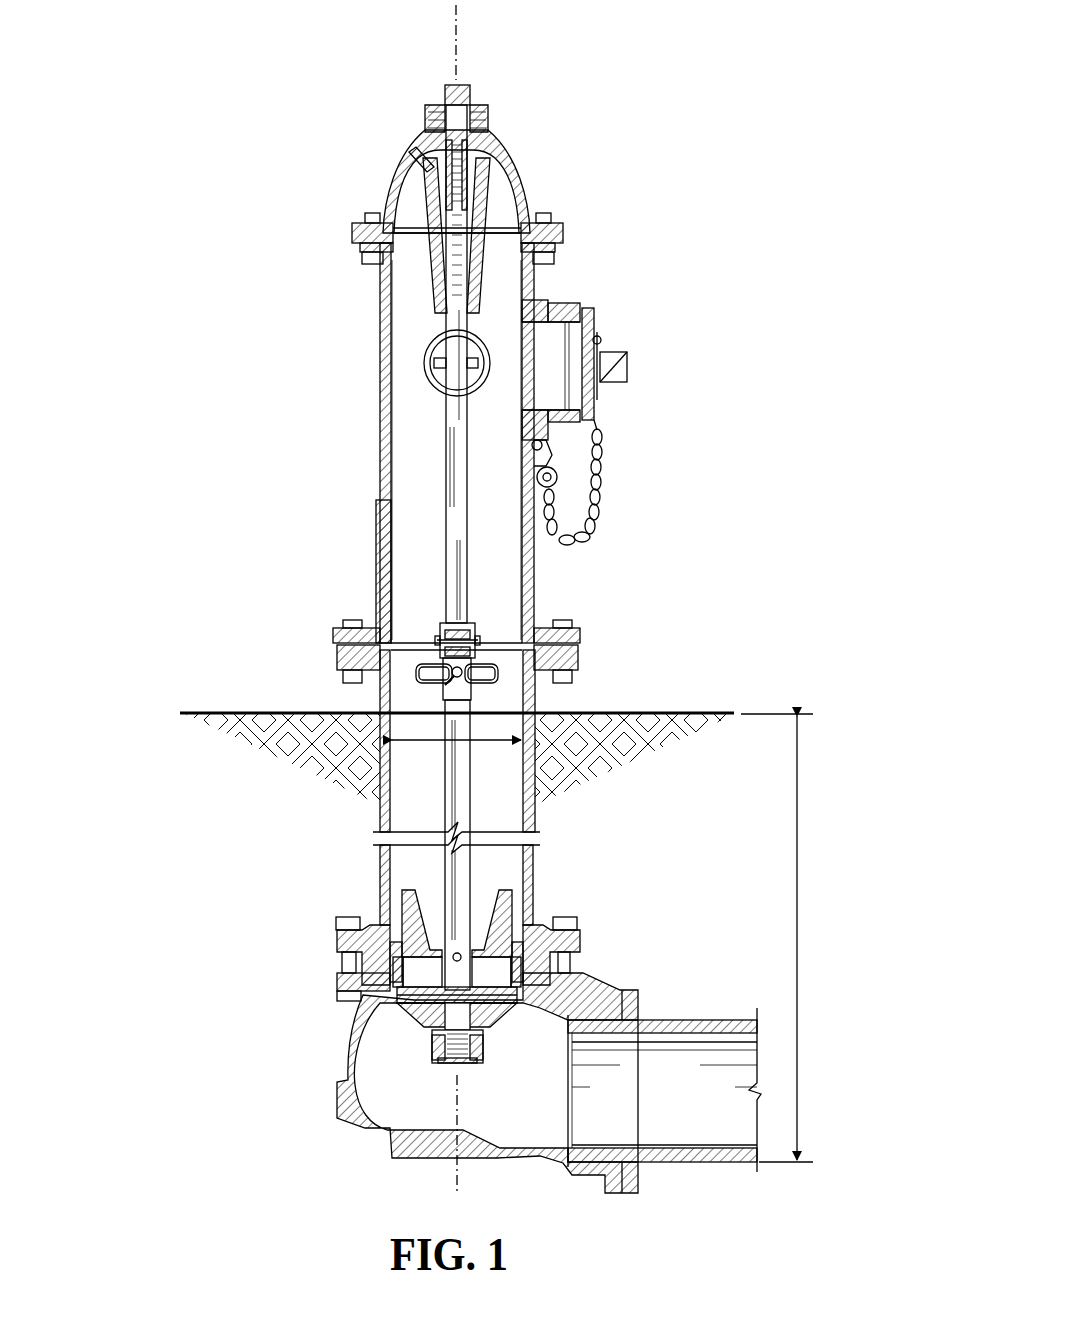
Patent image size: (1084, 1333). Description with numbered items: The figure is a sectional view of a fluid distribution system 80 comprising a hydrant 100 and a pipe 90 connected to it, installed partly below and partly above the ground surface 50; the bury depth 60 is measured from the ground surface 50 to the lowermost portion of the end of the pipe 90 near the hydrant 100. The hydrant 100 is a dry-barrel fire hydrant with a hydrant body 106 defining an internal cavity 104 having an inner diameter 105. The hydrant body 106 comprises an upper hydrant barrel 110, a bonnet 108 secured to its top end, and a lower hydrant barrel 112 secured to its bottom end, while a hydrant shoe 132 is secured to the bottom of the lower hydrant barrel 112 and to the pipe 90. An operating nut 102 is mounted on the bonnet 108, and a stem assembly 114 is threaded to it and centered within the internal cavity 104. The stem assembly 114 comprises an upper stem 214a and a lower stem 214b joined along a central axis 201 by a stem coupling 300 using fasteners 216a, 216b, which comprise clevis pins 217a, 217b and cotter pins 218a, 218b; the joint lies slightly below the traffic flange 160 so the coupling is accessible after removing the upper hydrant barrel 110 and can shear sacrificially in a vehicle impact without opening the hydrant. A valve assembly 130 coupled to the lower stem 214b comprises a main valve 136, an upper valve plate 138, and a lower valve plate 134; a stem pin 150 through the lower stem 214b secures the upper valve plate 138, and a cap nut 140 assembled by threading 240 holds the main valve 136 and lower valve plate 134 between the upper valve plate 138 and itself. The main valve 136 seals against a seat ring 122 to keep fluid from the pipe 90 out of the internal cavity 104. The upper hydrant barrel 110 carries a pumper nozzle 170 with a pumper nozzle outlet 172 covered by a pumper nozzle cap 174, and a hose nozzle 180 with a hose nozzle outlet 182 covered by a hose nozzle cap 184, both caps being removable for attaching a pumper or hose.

The ground surface 50 is at (690, 713).
The bury depth 60 is at (798, 943).
The fluid distribution system 80 is at (787, 270).
The pipe 90 is at (694, 1020).
The hydrant 100 is at (380, 298).
The operating nut 102 is at (462, 92).
The internal cavity 104 is at (395, 547).
The inner diameter 105 is at (425, 745).
The hydrant body 106 is at (385, 580).
The bonnet 108 is at (400, 152).
The upper hydrant barrel 110 is at (381, 328).
The lower hydrant barrel 112 is at (377, 823).
The stem assembly 114 is at (468, 483).
The seat ring 122 is at (517, 930).
The valve assembly 130 is at (493, 1030).
The hydrant shoe 132 is at (367, 1131).
The lower valve plate 134 is at (407, 1027).
The main valve 136 is at (397, 997).
The upper valve plate 138 is at (362, 950).
The cap nut 140 is at (455, 1065).
The stem pin 150 is at (460, 953).
The traffic flange 160 is at (568, 652).
The pumper nozzle 170 is at (587, 313).
The pumper nozzle outlet 172 is at (607, 343).
The pumper nozzle cap 174 is at (627, 373).
The hose nozzle 180 is at (421, 366).
The hose nozzle outlet 182 is at (425, 357).
The hose nozzle cap 184 is at (434, 382).
The central axis 201 is at (452, 38).
The upper stem 214a is at (452, 454).
The lower stem 214b is at (452, 786).
The fastener 216a is at (440, 637).
The fastener 216b is at (418, 684).
The clevis pin 217a is at (437, 644).
The clevis pin 217b is at (462, 678).
The cotter pin 218a is at (475, 650).
The cotter pin 218b is at (498, 676).
The threading 240 is at (453, 1046).
The stem coupling 300 is at (480, 666).